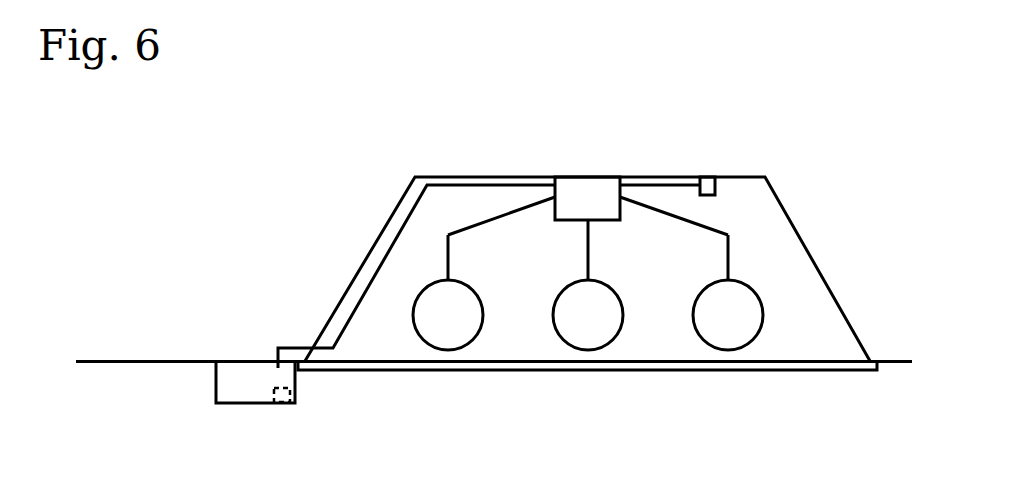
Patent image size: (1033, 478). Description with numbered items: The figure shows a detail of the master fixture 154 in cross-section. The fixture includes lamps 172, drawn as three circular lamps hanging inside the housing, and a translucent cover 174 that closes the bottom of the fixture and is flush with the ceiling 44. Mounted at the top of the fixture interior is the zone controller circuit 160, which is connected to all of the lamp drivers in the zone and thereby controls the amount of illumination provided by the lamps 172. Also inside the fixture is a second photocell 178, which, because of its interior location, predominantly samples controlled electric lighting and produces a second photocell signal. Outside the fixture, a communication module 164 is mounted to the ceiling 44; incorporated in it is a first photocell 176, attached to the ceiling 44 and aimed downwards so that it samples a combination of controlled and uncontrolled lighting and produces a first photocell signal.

The ceiling 44 is at (893, 363).
The master fixture 154 is at (366, 186).
The zone controller circuit 160 is at (581, 176).
The communication module 164 is at (242, 405).
The lamps 172 is at (553, 303).
The translucent cover 174 is at (666, 372).
The first photocell 176 is at (298, 397).
The second photocell 178 is at (708, 176).